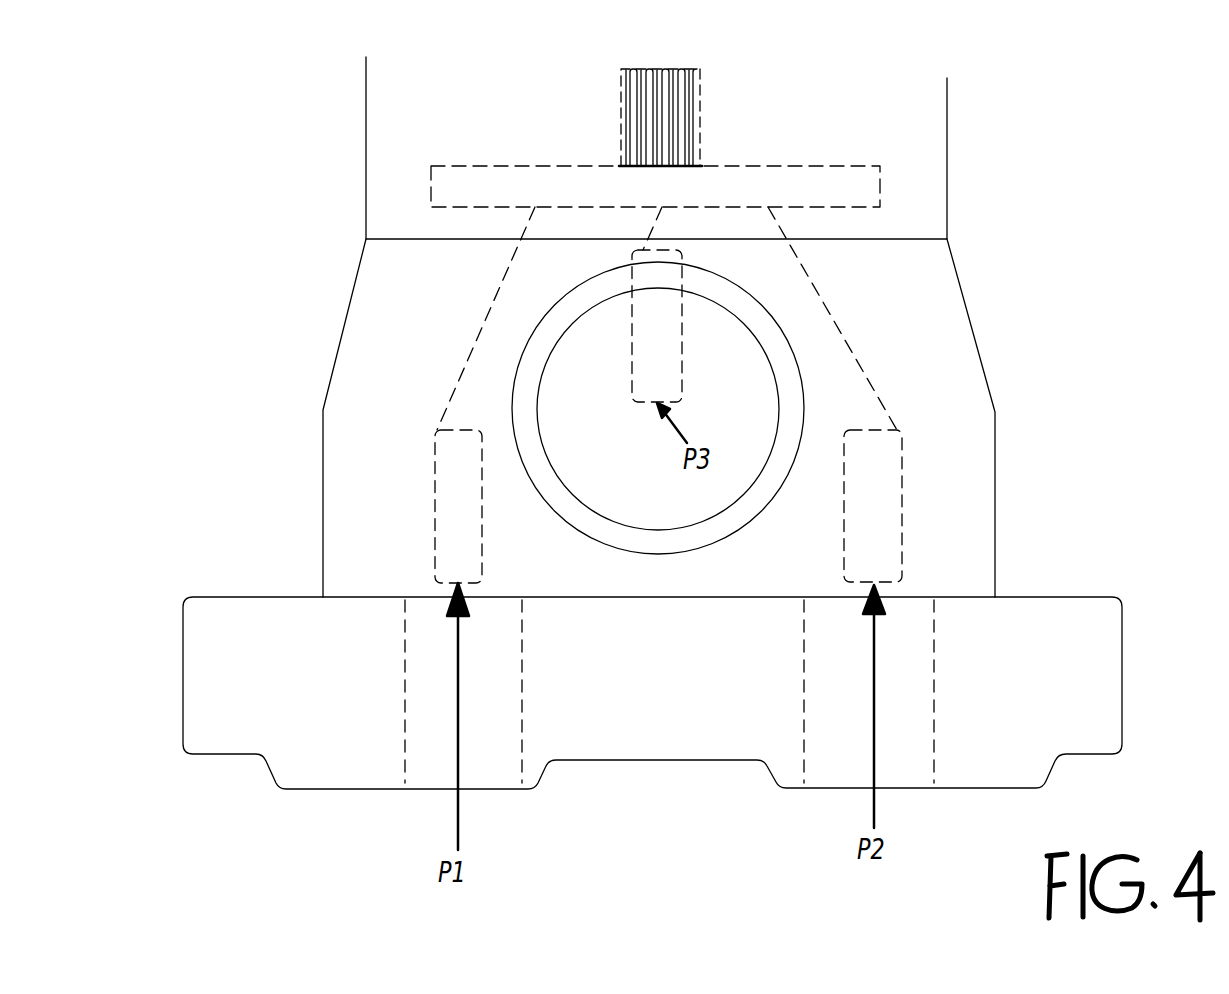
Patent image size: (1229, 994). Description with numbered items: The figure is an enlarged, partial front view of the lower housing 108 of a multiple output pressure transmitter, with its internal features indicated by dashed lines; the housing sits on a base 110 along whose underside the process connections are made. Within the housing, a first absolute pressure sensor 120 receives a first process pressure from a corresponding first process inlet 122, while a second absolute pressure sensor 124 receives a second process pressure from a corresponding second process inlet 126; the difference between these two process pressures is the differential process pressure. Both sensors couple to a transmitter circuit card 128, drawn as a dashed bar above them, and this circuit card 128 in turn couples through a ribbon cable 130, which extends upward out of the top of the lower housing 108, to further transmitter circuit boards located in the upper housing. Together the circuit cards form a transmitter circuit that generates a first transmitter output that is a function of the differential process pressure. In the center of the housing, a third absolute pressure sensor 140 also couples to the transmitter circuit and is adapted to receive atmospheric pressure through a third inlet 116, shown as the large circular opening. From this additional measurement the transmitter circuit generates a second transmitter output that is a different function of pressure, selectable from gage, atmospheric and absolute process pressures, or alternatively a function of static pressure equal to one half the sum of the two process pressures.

The lower housing 108 is at (985, 189).
The base 110 is at (222, 597).
The third inlet 116 is at (740, 410).
The first absolute pressure sensor 120 is at (435, 483).
The first process inlet 122 is at (487, 750).
The second absolute pressure sensor 124 is at (902, 485).
The second process inlet 126 is at (838, 752).
The transmitter circuit card 128 is at (820, 167).
The ribbon cable 130 is at (700, 91).
The third absolute pressure sensor 140 is at (682, 358).